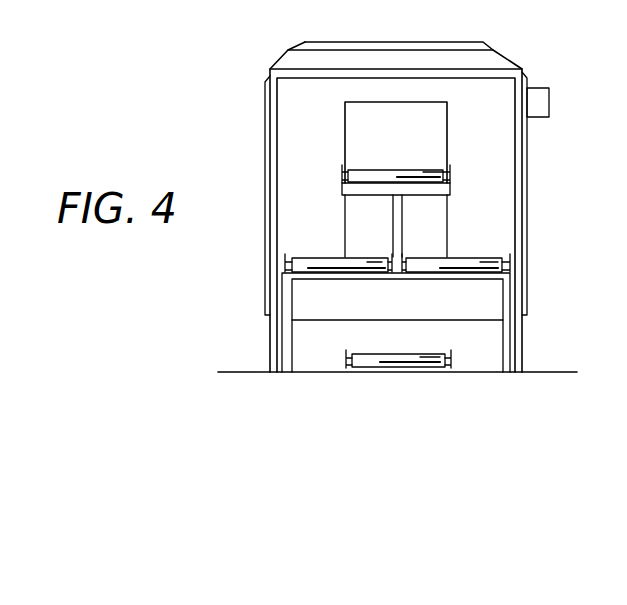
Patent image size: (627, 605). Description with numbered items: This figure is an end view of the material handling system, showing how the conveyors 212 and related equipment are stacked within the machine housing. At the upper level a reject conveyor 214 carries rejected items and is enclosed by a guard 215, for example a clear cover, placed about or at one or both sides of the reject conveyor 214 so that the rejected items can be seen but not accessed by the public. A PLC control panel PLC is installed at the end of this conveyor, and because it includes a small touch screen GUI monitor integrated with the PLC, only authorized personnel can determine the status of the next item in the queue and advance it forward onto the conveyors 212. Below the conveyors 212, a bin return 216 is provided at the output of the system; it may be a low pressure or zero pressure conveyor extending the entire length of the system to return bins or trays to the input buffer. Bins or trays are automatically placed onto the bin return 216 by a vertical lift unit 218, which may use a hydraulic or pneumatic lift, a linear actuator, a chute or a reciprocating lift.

The conveyors 212 is at (472, 255).
The reject conveyor 214 is at (432, 168).
The guard 215 is at (345, 140).
The bin return 216 is at (408, 358).
The vertical lift unit 218 is at (347, 283).
The PLC control panel PLC is at (547, 88).